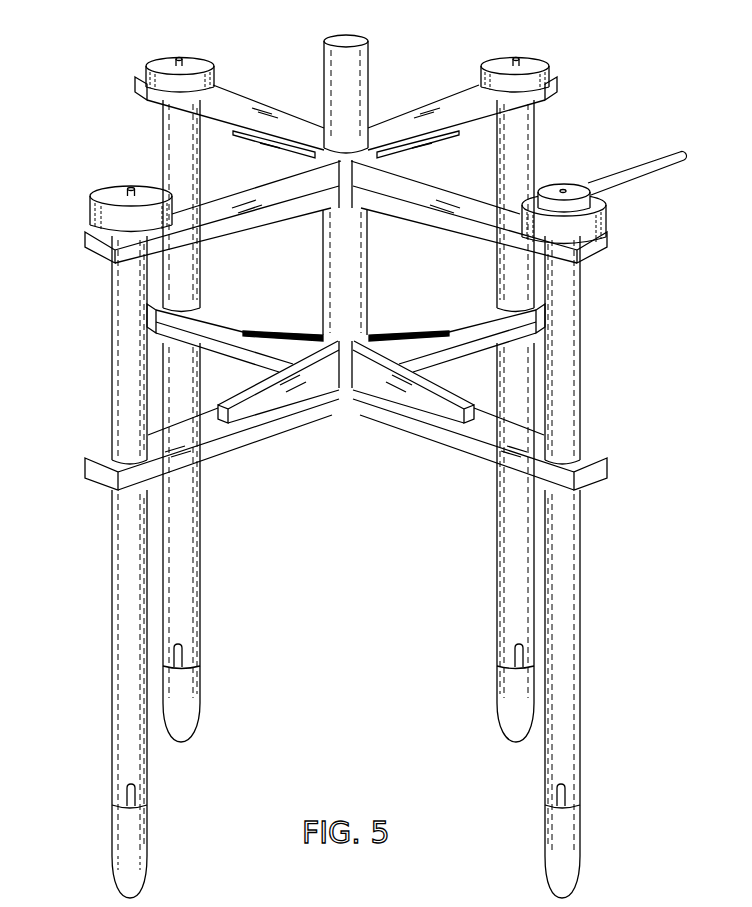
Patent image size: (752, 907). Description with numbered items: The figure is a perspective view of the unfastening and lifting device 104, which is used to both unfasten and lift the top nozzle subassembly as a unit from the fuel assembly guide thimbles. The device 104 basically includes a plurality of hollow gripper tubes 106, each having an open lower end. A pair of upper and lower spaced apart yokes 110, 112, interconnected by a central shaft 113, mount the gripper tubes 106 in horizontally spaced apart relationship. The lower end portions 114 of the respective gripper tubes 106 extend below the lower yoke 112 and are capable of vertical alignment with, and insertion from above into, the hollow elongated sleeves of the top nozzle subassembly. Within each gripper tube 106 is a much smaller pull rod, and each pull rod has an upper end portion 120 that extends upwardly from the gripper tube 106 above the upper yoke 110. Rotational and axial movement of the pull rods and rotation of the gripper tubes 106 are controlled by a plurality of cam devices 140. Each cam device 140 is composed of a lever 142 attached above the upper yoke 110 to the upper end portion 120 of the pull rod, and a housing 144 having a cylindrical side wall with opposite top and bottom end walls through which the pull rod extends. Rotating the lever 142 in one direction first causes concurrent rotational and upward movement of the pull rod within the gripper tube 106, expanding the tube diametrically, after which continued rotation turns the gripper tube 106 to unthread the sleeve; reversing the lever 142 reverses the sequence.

The unfastening and lifting device 104 is at (371, 451).
The gripper tube 106 is at (203, 273).
The upper yoke 110 is at (407, 106).
The lower yoke 112 is at (324, 424).
The central shaft 113 is at (368, 257).
The lower end portion of gripper tube 114 is at (112, 752).
The upper end portion of pull rod 120 is at (180, 60).
The cam device 140 is at (648, 154).
The lever 142 is at (663, 173).
The housing 144 is at (216, 68).